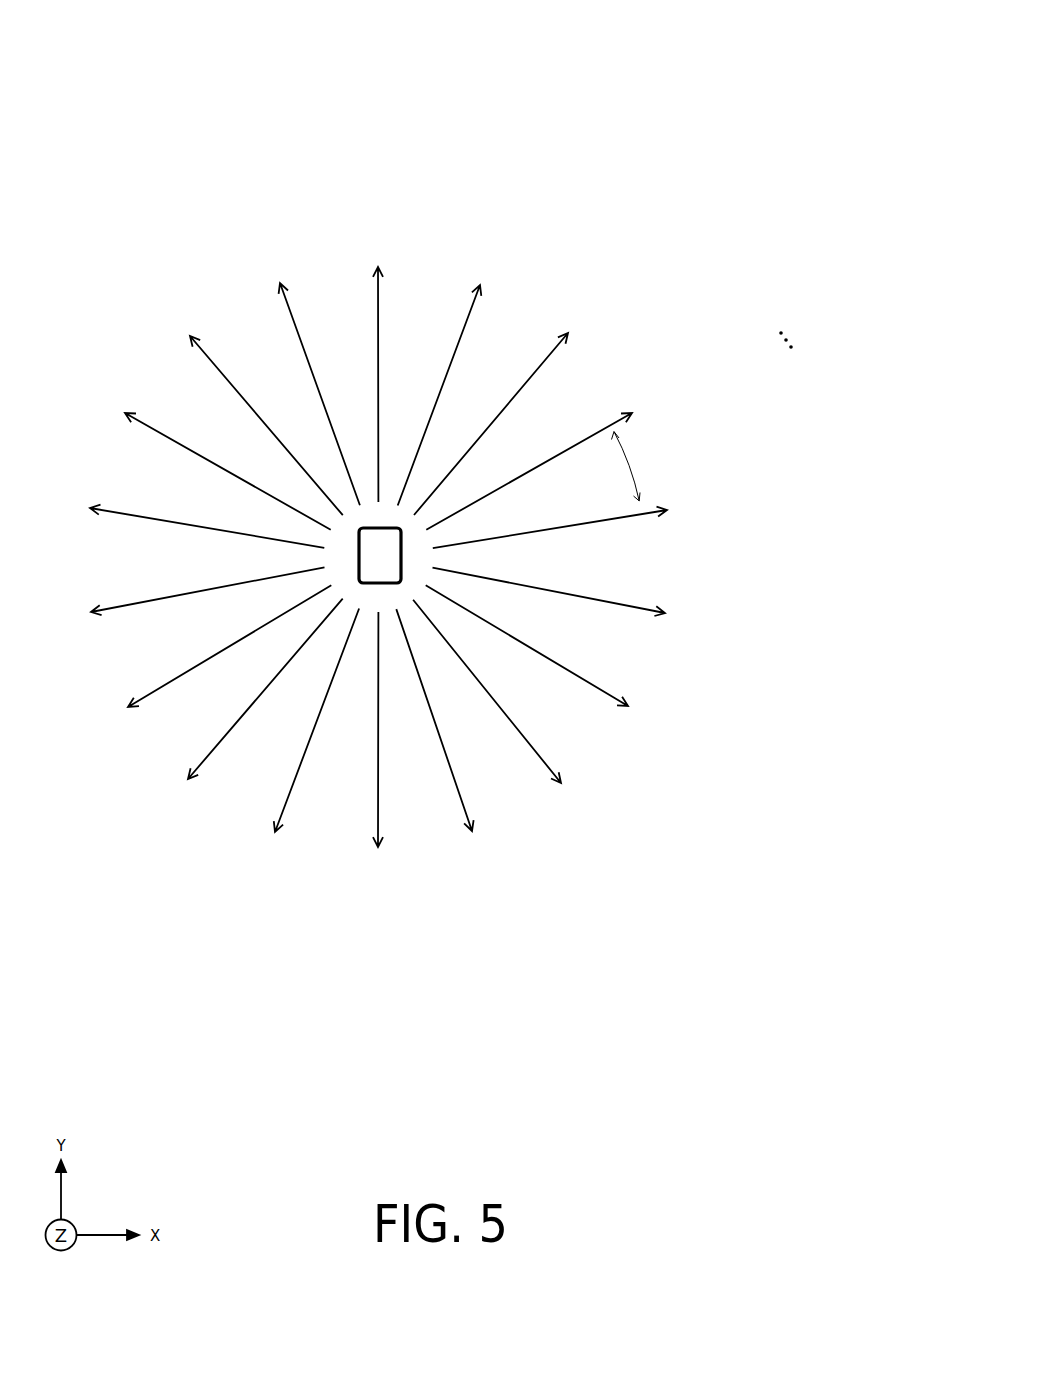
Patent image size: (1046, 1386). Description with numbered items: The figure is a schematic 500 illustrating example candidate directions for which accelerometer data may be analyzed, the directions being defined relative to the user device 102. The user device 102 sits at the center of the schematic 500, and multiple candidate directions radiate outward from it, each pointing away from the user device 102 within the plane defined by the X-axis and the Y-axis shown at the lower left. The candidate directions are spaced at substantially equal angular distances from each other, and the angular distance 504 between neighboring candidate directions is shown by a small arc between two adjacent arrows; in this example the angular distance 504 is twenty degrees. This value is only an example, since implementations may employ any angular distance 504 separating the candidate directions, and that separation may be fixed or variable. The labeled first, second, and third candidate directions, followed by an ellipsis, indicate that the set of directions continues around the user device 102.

The schematic 500 is at (692, 52).
The angular distance 504 is at (633, 468).
The user device 102 is at (372, 586).